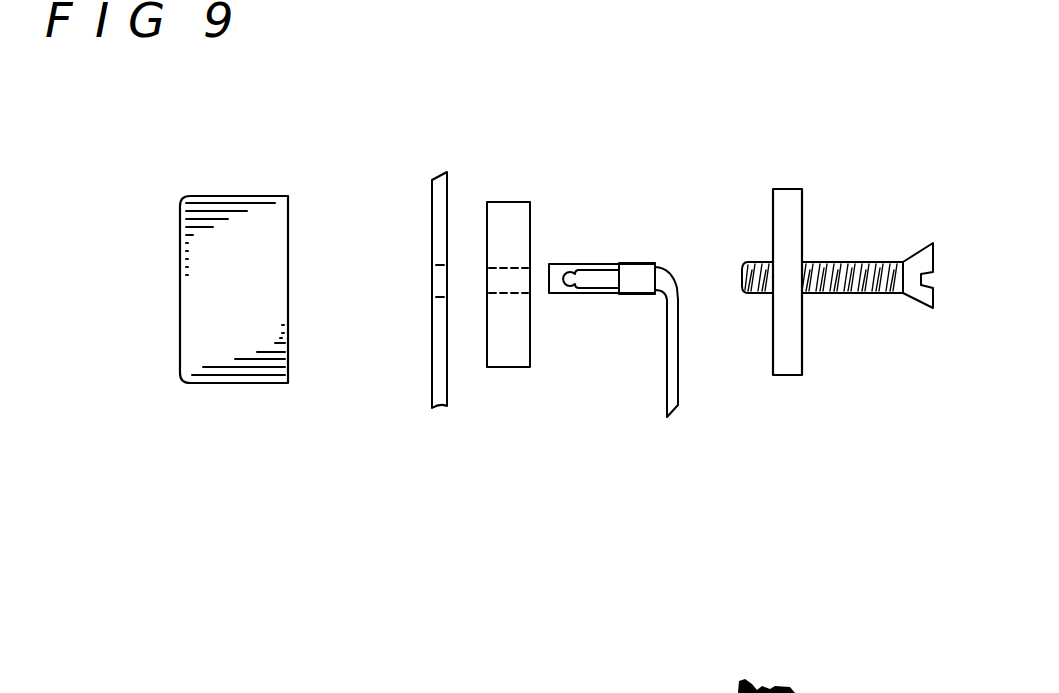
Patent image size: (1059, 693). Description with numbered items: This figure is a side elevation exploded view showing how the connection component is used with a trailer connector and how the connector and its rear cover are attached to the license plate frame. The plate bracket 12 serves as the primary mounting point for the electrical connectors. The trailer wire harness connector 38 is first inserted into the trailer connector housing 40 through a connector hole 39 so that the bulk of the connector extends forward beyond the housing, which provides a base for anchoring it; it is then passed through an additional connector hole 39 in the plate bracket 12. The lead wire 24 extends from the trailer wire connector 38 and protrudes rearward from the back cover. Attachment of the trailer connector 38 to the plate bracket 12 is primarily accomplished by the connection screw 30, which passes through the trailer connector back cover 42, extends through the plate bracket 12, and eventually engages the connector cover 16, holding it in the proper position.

The connector cover 16 is at (183, 198).
The plate bracket 12 is at (437, 172).
The trailer connector housing 40 is at (522, 198).
The connector hole 39 is at (493, 283).
The trailer wire harness connector 38 is at (596, 262).
The lead wire 24 is at (661, 405).
The trailer connector back cover 42 is at (785, 186).
The connection screw 30 is at (913, 245).